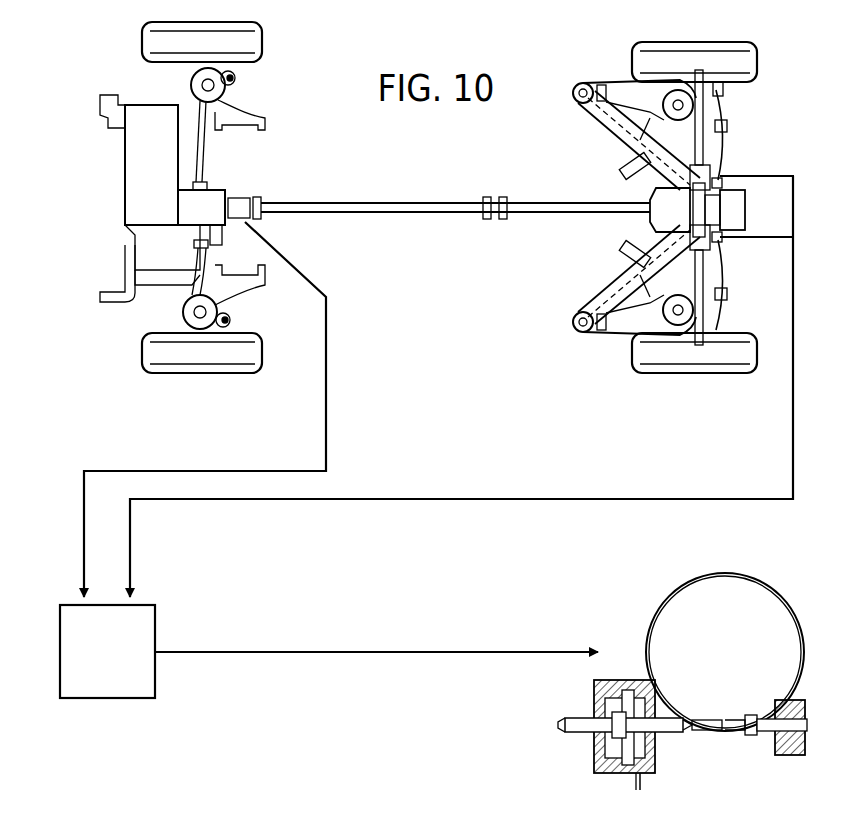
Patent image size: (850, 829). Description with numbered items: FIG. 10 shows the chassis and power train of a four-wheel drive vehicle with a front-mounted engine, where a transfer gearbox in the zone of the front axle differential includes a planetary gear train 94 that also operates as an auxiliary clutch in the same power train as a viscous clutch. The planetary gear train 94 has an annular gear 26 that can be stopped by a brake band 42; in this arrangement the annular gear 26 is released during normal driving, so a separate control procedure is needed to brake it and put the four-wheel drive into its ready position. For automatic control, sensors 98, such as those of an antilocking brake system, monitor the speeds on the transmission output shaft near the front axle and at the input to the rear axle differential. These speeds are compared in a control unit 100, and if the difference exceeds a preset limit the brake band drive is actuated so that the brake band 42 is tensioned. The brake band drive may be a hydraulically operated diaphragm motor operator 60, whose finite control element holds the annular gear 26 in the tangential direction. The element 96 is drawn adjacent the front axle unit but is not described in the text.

The front wheel drive unit 96 is at (185, 202).
The drive shaft 94 is at (248, 221).
The brake line 98 is at (226, 212).
The control unit 100 is at (60, 650).
The brake drum 26 is at (788, 634).
The ring 42 is at (775, 600).
The sensor 60 is at (584, 710).